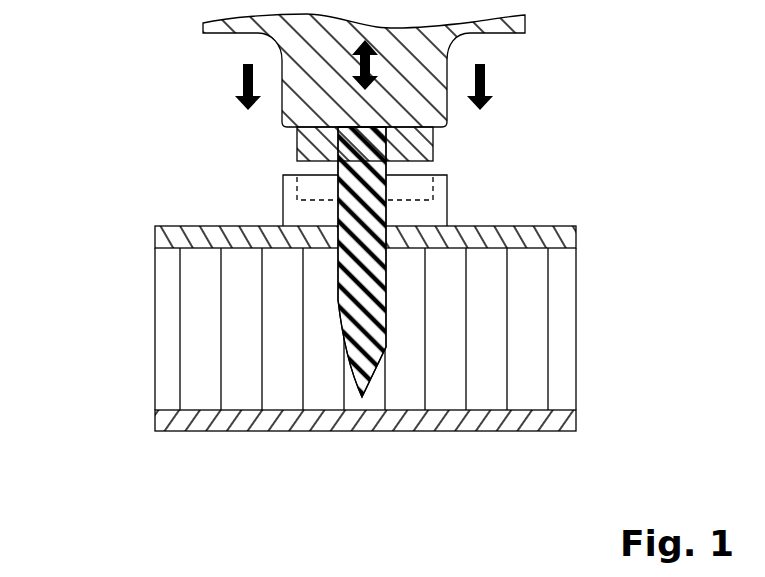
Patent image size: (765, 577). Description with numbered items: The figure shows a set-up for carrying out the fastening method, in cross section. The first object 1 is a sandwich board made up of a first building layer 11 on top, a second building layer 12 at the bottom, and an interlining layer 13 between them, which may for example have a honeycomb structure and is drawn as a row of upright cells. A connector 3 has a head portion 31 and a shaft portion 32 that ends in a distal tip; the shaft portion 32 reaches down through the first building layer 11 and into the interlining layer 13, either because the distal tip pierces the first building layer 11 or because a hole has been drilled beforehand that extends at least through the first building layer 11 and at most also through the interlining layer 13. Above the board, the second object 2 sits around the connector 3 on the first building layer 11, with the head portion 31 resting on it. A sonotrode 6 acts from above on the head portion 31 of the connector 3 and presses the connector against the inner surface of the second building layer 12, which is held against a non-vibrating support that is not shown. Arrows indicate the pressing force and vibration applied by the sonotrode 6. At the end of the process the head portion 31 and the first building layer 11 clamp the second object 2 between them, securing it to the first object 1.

The first object 1 is at (383, 320).
The first building layer 11 is at (203, 230).
The second building layer 12 is at (228, 412).
The interlining layer 13 is at (232, 330).
The second object 2 is at (433, 199).
The connector 3 is at (515, 307).
The head portion 31 is at (425, 144).
The shaft portion 32 is at (388, 262).
The sonotrode 6 is at (313, 50).